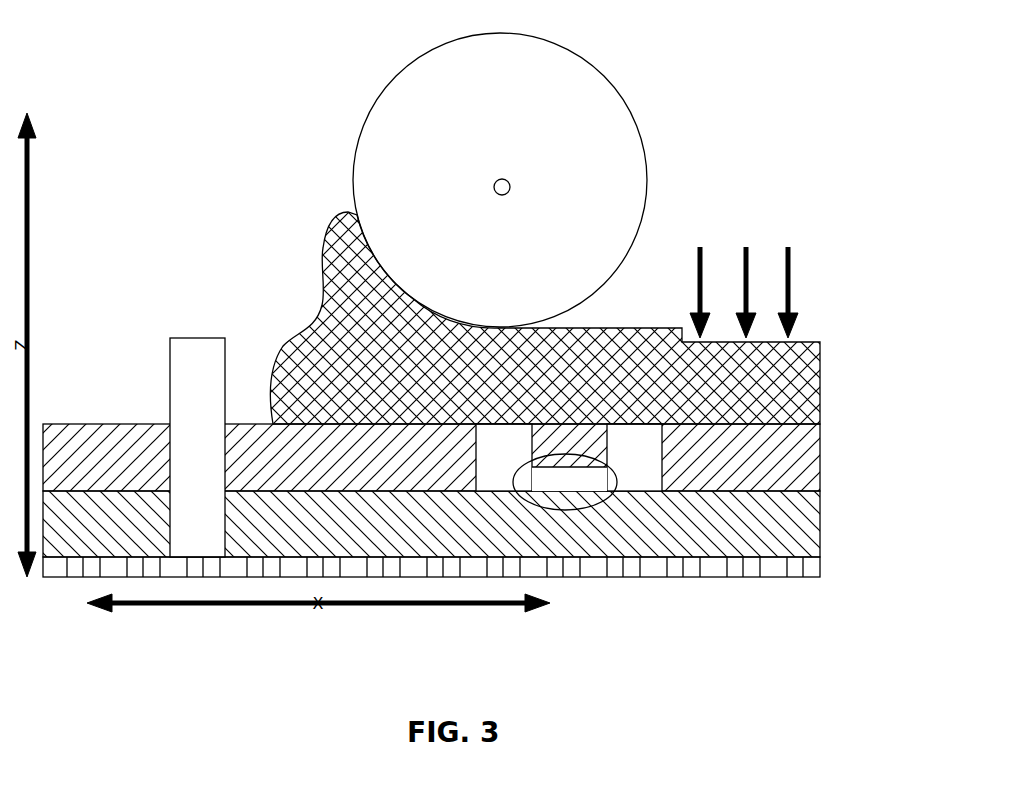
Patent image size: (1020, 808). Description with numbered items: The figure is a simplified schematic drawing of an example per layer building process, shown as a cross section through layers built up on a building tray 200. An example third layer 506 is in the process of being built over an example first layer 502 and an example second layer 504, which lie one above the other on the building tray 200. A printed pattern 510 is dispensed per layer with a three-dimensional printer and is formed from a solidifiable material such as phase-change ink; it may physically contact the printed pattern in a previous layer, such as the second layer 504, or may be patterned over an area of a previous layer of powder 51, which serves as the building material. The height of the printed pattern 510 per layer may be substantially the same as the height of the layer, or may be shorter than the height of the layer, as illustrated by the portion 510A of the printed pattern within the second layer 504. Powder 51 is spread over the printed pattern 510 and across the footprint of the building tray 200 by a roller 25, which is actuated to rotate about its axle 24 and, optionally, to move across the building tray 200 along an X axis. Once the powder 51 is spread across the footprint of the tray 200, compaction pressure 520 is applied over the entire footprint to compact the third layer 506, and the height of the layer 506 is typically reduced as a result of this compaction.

The axle 24 is at (494, 184).
The roller 25 is at (646, 166).
The powder 51 is at (323, 298).
The building tray 200 is at (431, 598).
The first layer 502 is at (820, 522).
The second layer 504 is at (820, 461).
The third layer 506 is at (820, 393).
The printed pattern 510 is at (170, 383).
The portion of printed pattern 510A is at (570, 510).
The compaction pressure 520 is at (792, 287).